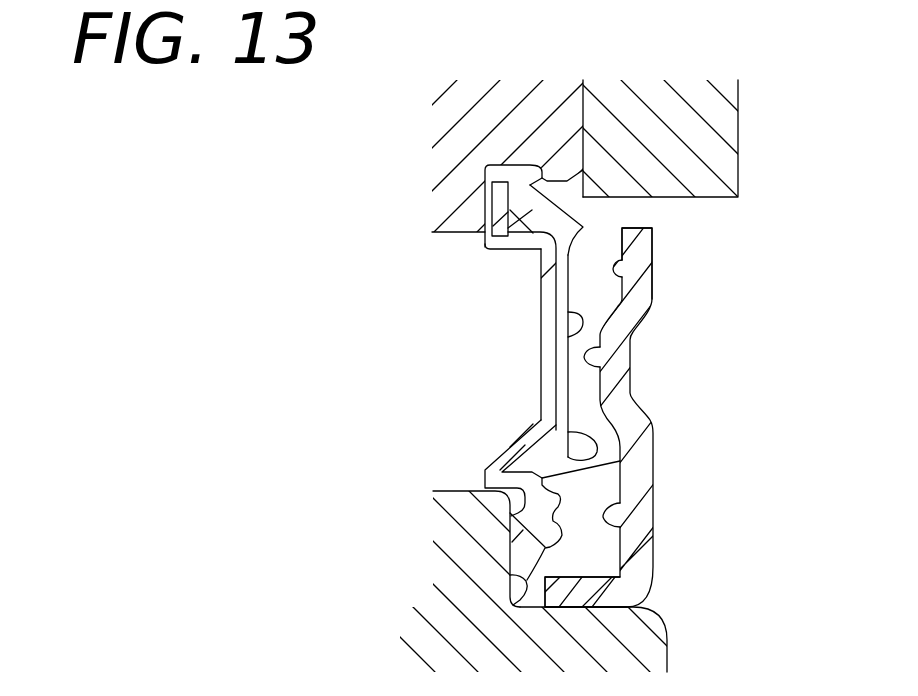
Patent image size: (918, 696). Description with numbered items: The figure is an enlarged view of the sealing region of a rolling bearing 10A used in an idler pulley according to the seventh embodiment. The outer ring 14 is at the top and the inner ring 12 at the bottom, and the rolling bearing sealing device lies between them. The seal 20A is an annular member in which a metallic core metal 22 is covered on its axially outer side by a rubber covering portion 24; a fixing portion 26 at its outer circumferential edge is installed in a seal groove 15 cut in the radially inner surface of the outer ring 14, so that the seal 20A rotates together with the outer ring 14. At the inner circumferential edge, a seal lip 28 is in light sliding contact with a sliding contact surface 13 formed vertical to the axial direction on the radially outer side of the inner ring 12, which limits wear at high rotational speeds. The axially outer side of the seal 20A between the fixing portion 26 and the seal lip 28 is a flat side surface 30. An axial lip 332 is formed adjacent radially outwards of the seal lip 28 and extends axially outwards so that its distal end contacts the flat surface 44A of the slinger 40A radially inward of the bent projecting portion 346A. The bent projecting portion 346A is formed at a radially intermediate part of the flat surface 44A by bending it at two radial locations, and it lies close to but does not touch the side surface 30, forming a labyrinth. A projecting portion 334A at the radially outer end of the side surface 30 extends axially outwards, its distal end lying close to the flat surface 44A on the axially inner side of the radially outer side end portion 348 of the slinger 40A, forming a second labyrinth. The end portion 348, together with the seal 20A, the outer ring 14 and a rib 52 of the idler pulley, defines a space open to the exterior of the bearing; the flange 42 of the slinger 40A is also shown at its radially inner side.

The rolling bearing 10A is at (680, 318).
The inner ring 12 is at (593, 654).
The sliding contact surface 13 is at (515, 601).
The outer ring 14 is at (564, 127).
The seal groove 15 is at (530, 192).
The seal 20A is at (536, 270).
The core metal 22 is at (548, 305).
The rubber covering portion 24 is at (497, 243).
The fixing portion 26 is at (513, 173).
The seal lip 28 is at (518, 549).
The side surface 30 is at (563, 338).
The slinger 40A is at (670, 428).
The flange portion 42 is at (587, 588).
The flat surface 44A is at (613, 261).
The rib 52 is at (680, 166).
The axial lip 332 is at (560, 432).
The projecting portion 334A is at (590, 226).
The bent projecting portion 346A is at (592, 366).
The radially outer side end portion 348 is at (640, 245).